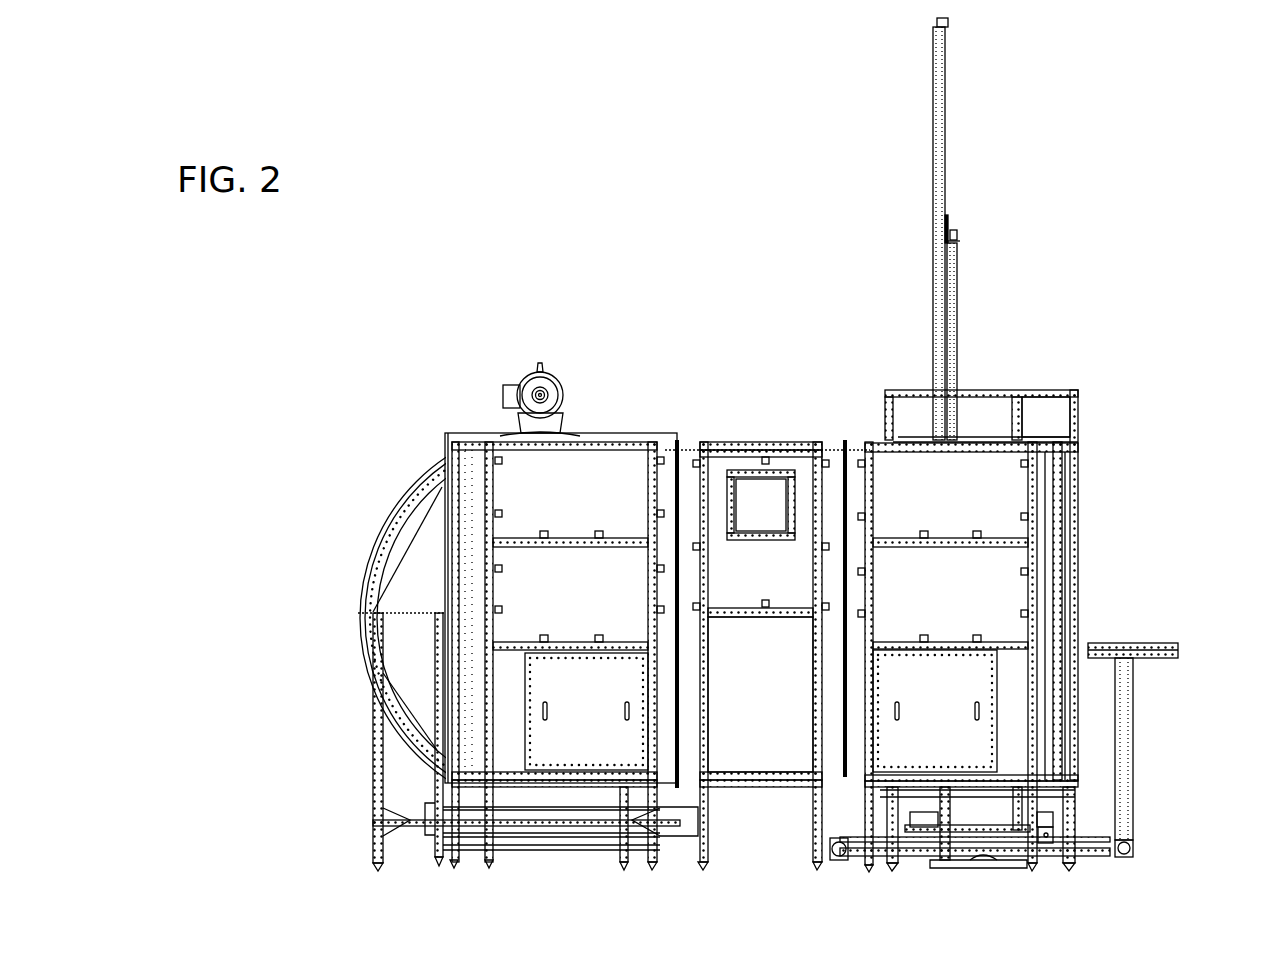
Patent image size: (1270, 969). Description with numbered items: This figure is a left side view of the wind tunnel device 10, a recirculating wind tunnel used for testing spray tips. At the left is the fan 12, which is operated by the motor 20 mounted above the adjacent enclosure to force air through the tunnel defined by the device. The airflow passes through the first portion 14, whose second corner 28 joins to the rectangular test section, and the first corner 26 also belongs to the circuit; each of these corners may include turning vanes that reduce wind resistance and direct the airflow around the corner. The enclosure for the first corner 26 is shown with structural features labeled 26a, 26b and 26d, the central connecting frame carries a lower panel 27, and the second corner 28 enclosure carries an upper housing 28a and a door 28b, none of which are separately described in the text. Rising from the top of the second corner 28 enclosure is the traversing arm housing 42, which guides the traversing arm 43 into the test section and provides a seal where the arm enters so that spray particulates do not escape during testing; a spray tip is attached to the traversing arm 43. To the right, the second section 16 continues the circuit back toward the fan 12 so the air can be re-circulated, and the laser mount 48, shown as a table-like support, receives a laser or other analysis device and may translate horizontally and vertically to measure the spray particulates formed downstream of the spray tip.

The wind tunnel device 10 is at (563, 212).
The fan 12 is at (357, 503).
The first portion 14 is at (757, 393).
The second section 16 is at (1100, 592).
The motor 20 is at (547, 373).
The first corner 26 is at (590, 447).
The top rail of first enclosure 26a is at (487, 443).
The access door of first enclosure 26b is at (521, 773).
The side panel of first enclosure 26d is at (557, 583).
The lower panel of intermediate section 27 is at (742, 763).
The second corner 28 is at (1053, 488).
The upper housing of second enclosure 28a is at (1015, 442).
The access door of second enclosure 28b is at (957, 788).
The traversing arm housing 42 is at (945, 132).
The traversing arm 43 is at (958, 277).
The laser mount 48 is at (1163, 643).